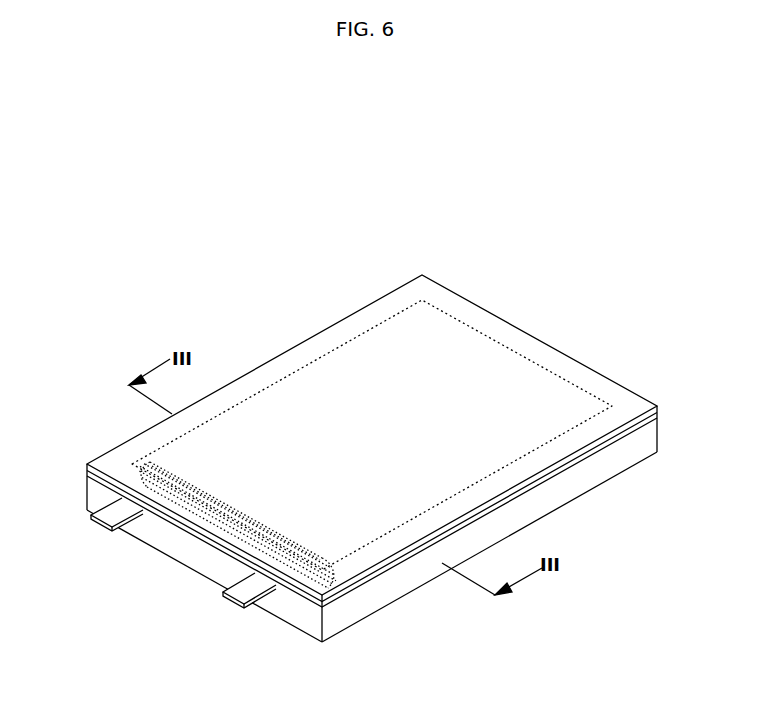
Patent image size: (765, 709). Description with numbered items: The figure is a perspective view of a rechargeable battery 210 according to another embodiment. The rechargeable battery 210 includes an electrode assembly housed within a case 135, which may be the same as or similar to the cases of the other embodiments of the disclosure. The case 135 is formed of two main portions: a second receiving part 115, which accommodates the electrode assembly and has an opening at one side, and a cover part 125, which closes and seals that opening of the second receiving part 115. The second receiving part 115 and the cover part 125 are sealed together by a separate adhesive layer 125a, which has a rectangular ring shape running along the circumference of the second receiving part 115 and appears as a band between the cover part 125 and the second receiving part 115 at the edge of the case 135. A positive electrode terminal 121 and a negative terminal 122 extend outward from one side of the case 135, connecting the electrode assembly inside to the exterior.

The rechargeable battery 210 is at (334, 202).
The case 135 is at (688, 362).
The cover part 125 is at (582, 364).
The adhesive layer 125a is at (570, 467).
The second receiving part 115 is at (657, 428).
The negative terminal 122 is at (103, 530).
The positive electrode terminal 121 is at (230, 603).